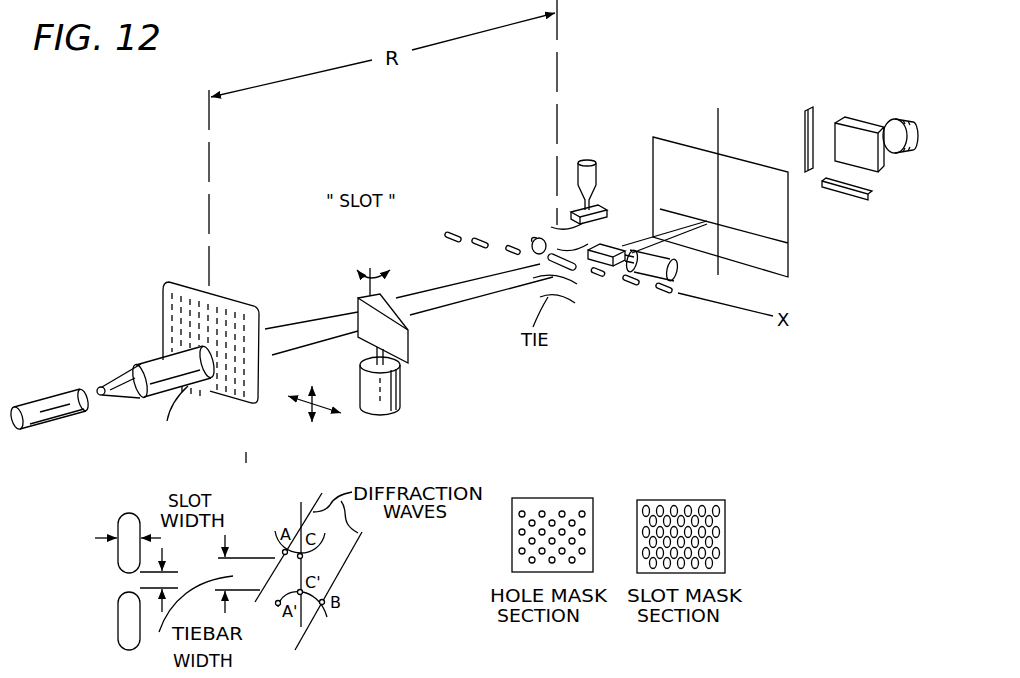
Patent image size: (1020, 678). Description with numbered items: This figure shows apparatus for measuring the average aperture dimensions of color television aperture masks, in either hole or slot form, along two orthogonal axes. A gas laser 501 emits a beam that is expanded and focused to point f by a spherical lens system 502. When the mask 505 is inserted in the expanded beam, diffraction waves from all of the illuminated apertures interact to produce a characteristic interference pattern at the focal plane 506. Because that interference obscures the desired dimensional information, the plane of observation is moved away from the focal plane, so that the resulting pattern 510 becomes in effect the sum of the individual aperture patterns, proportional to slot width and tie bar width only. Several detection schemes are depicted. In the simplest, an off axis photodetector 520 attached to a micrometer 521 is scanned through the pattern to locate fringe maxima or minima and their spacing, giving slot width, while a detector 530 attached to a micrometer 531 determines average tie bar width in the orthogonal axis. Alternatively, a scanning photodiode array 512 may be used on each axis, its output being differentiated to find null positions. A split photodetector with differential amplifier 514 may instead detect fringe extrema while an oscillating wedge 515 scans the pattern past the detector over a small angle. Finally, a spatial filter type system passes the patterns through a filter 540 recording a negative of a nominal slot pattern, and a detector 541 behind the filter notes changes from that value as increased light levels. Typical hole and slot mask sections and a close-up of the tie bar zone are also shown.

The gas laser 501 is at (52, 399).
The spherical lens system 502 is at (123, 360).
The mask 505 is at (162, 308).
The resulting pattern 510 is at (444, 237).
The split photodetector/differential amplifier 514 is at (531, 242).
The oscillating wedge 515 is at (412, 354).
The off axis photodetector 520 is at (612, 268).
The micrometer 521 is at (678, 273).
The detector 530 is at (603, 219).
The micrometer 531 is at (612, 160).
The focal plane 506 is at (789, 237).
The scanning photodiode array 512 is at (804, 134).
The filter 540 is at (836, 120).
The detector 541 is at (893, 119).